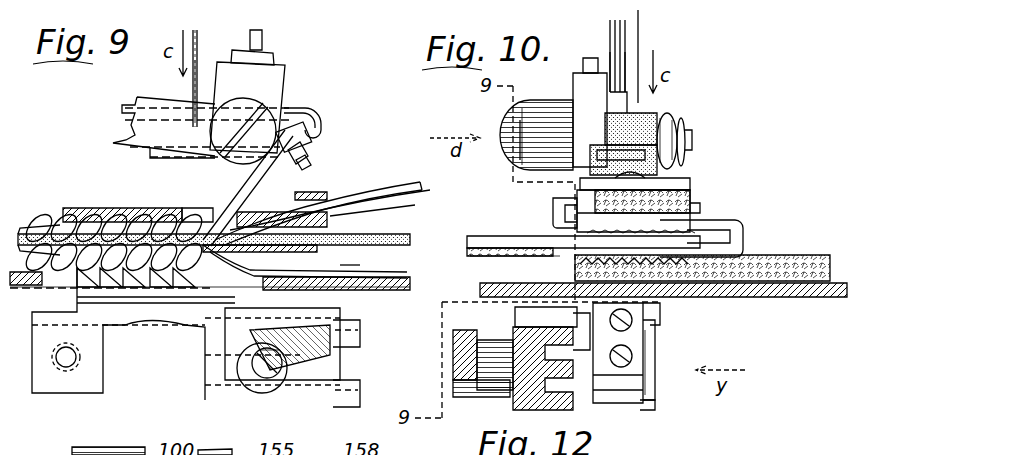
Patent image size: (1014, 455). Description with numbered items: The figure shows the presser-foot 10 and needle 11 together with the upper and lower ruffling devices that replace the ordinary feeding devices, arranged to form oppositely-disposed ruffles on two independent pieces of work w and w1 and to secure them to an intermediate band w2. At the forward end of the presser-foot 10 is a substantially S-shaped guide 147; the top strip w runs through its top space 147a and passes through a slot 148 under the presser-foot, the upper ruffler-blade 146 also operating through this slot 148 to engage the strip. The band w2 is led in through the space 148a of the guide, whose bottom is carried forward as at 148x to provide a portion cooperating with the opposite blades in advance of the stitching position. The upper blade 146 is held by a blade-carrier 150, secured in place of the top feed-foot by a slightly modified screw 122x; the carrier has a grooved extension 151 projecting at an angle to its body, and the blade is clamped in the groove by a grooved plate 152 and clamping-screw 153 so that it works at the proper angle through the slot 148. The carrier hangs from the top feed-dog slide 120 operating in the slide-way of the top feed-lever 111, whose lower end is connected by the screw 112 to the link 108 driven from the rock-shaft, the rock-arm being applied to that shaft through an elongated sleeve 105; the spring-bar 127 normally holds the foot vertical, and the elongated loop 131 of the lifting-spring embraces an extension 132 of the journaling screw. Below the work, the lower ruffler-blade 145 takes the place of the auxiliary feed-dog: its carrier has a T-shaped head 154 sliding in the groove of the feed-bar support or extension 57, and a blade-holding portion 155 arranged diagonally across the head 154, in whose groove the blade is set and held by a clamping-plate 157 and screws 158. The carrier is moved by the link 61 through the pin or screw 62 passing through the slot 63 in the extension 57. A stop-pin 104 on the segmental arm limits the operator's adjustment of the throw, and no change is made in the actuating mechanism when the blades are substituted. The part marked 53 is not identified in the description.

In FIG. 9, the presser-foot 10 is at (90, 208).
In FIG. 10, the presser-foot 10 is at (565, 249).
In FIG. 9, the needle 11 is at (192, 88).
In FIG. 10, the needle 11 is at (655, 102).
In FIG. 9, the base plate 53 is at (385, 285).
In FIG. 10, the base plate 53 is at (808, 297).
In FIG. 9, the feed-bar support or extension 57 is at (311, 393).
In FIG. 10, the feed-bar support or extension 57 is at (513, 410).
In FIG. 9, the link 61 is at (265, 380).
In FIG. 10, the link 61 is at (481, 374).
In FIG. 9, the pin or screw 62 is at (248, 385).
In FIG. 10, the pin or screw 62 is at (516, 365).
In FIG. 9, the slot 63 is at (235, 365).
In FIG. 9, the stop-pin or screw 104 is at (344, 257).
In FIG. 9, the elongated sleeve 105 is at (420, 205).
In FIG. 9, the link 108 is at (122, 131).
In FIG. 10, the link 108 is at (548, 104).
In FIG. 9, the top feed-lever 111 is at (284, 76).
In FIG. 10, the top feed-lever 111 is at (592, 120).
In FIG. 9, the screw 112 is at (242, 100).
In FIG. 10, the screw 112 is at (520, 120).
In FIG. 9, the top feed-dog slide 120 is at (276, 58).
In FIG. 10, the top feed-dog slide 120 is at (592, 58).
In FIG. 10, the modified screw 122x is at (690, 148).
In FIG. 9, the spring-bar 127 is at (264, 35).
In FIG. 10, the spring-bar 127 is at (642, 70).
In FIG. 9, the elongated loop 131 is at (320, 114).
In FIG. 10, the elongated loop 131 is at (665, 115).
In FIG. 10, the screw extension 132 is at (678, 124).
In FIG. 9, the lower ruffler-blade 145 is at (200, 300).
In FIG. 10, the lower ruffler-blade 145 is at (655, 307).
In FIG. 9, the upper ruffler-blade 146 is at (255, 198).
In FIG. 10, the upper ruffler-blade 146 is at (700, 176).
In FIG. 9, the S-shaped guide 147 is at (325, 182).
In FIG. 10, the S-shaped guide 147 is at (553, 208).
In FIG. 9, the top space of guide 147a is at (322, 196).
In FIG. 10, the top space of guide 147a is at (700, 212).
In FIG. 9, the slot 148 is at (213, 208).
In FIG. 9, the guide space 148a is at (340, 218).
In FIG. 10, the guide space 148a is at (745, 239).
In FIG. 9, the forward-carried bottom portion 148x is at (305, 260).
In FIG. 10, the blade-carrier 150 is at (690, 126).
In FIG. 9, the grooved extension 151 is at (300, 132).
In FIG. 9, the grooved plate 152 is at (310, 150).
In FIG. 9, the clamping-screw 153 is at (312, 162).
In FIG. 10, the T-shaped head 154 is at (580, 375).
In FIG. 10, the blade-holding portion 155 is at (656, 355).
In FIG. 10, the clamping-plate 157 is at (657, 405).
In FIG. 10, the screws 158 is at (656, 370).
In FIG. 9, the top piece of work w is at (418, 183).
In FIG. 10, the top piece of work w is at (690, 192).
In FIG. 9, the second piece of work w1 is at (405, 272).
In FIG. 10, the second piece of work w1 is at (792, 265).
In FIG. 9, the intermediate band w2 is at (405, 219).
In FIG. 10, the intermediate band w2 is at (482, 258).